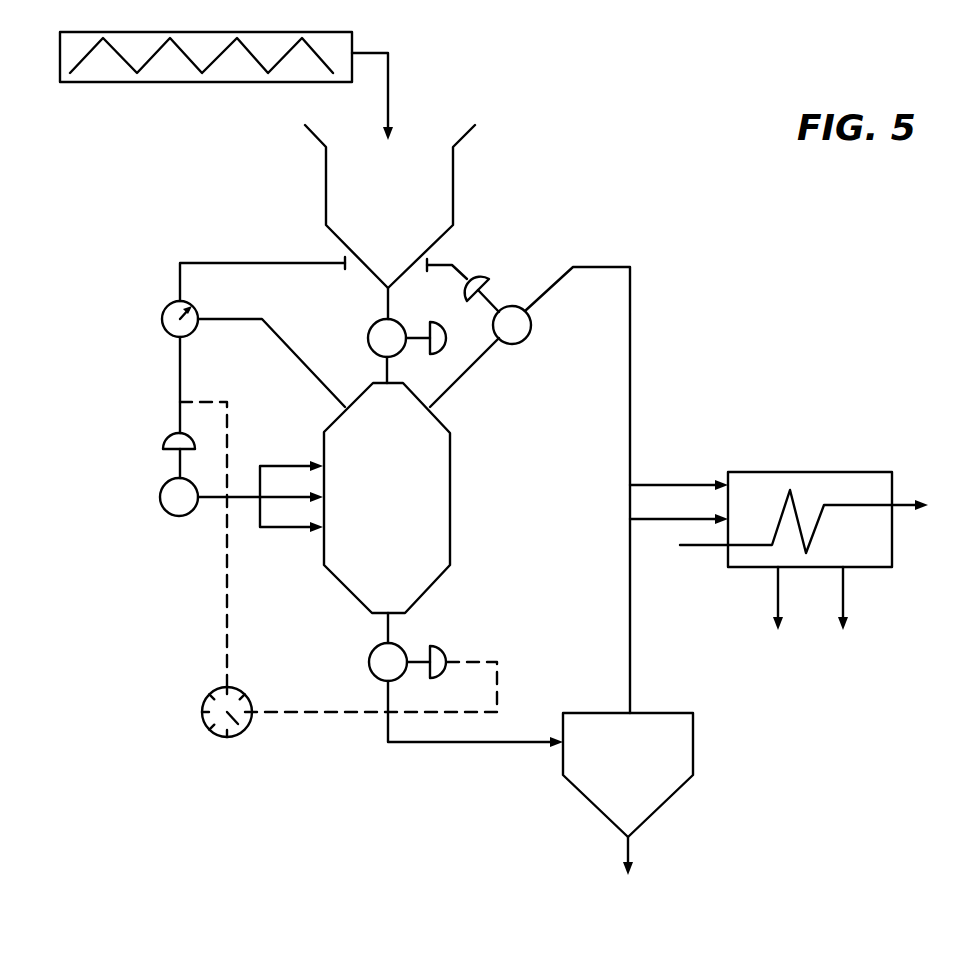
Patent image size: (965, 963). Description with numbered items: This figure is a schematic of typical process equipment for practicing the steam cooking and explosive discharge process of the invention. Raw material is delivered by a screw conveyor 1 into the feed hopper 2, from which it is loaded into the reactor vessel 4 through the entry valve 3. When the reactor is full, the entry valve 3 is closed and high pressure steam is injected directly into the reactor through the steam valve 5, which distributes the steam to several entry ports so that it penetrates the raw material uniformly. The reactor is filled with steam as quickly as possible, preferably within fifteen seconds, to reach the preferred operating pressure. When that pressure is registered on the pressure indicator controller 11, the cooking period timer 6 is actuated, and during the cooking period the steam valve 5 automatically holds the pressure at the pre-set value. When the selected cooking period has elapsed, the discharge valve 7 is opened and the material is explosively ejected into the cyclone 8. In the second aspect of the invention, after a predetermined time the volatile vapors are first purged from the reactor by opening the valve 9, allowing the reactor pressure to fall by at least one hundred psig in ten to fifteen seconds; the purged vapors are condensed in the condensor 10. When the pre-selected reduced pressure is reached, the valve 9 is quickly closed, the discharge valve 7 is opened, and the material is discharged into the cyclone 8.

The screw conveyor 1 is at (242, 82).
The feed hopper 2 is at (400, 199).
The entry valve 3 is at (369, 335).
The reactor vessel 4 is at (396, 512).
The steam valve 5 is at (160, 497).
The cooking period timer 6 is at (204, 722).
The discharge valve 7 is at (369, 662).
The cyclone 8 is at (638, 775).
The valve 9 is at (531, 331).
The condensor 10 is at (757, 472).
The pressure indicator controller 11 is at (163, 318).